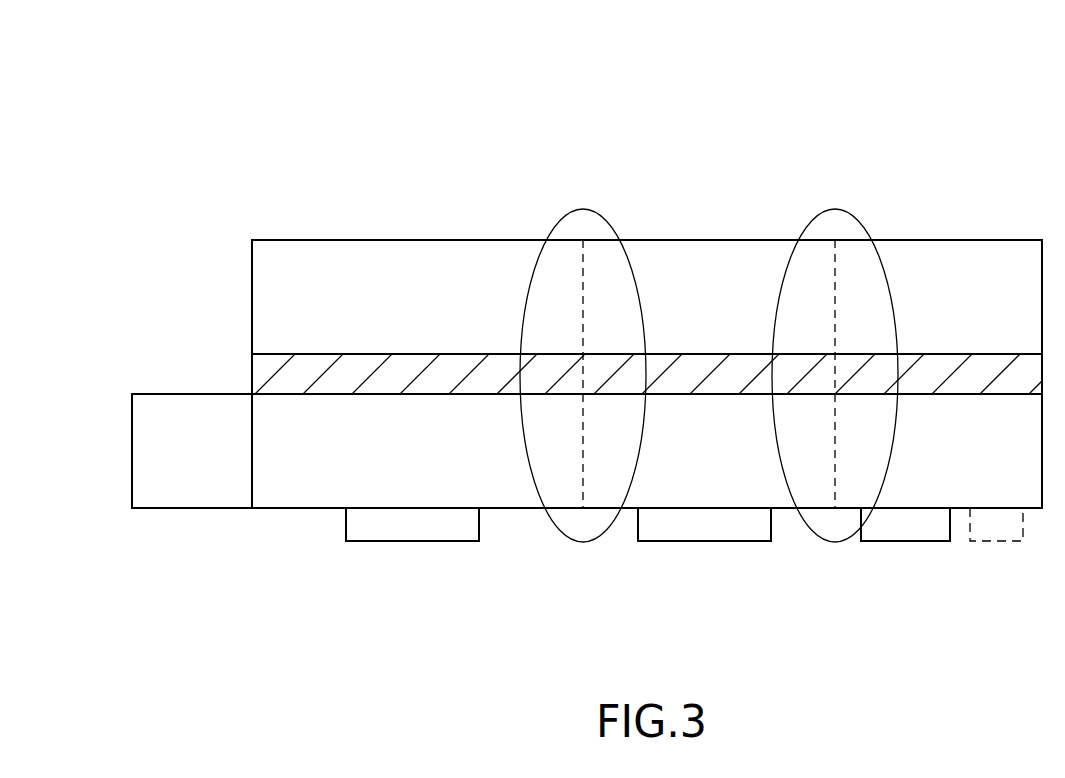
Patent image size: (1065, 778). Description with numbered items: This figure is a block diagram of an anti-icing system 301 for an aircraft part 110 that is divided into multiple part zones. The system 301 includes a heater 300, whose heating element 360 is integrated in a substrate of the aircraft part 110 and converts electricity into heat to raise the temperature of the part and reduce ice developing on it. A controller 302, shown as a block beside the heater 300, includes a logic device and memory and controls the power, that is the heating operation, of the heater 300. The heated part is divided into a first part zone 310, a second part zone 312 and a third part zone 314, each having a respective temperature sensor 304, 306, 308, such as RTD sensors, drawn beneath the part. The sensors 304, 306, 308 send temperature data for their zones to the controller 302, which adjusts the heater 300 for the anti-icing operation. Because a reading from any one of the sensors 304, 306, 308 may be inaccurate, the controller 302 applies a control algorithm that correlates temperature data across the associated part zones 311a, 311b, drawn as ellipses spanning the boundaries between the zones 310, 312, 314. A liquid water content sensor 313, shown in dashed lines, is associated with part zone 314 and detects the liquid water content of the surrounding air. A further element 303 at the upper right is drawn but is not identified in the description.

The aircraft part 110 is at (545, 228).
The heater 300 is at (253, 373).
The anti-icing system 301 is at (328, 110).
The controller 302 is at (210, 461).
The top plate 303 is at (1030, 240).
The temperature sensor 304 is at (412, 541).
The temperature sensor 306 is at (705, 541).
The temperature sensor 308 is at (908, 541).
The first part zone 310 is at (369, 240).
The associated part zone 311a is at (602, 221).
The associated part zone 311b is at (830, 209).
The second part zone 312 is at (724, 240).
The LWC sensor 313 is at (995, 541).
The third part zone 314 is at (950, 240).
The heating element 360 is at (447, 357).